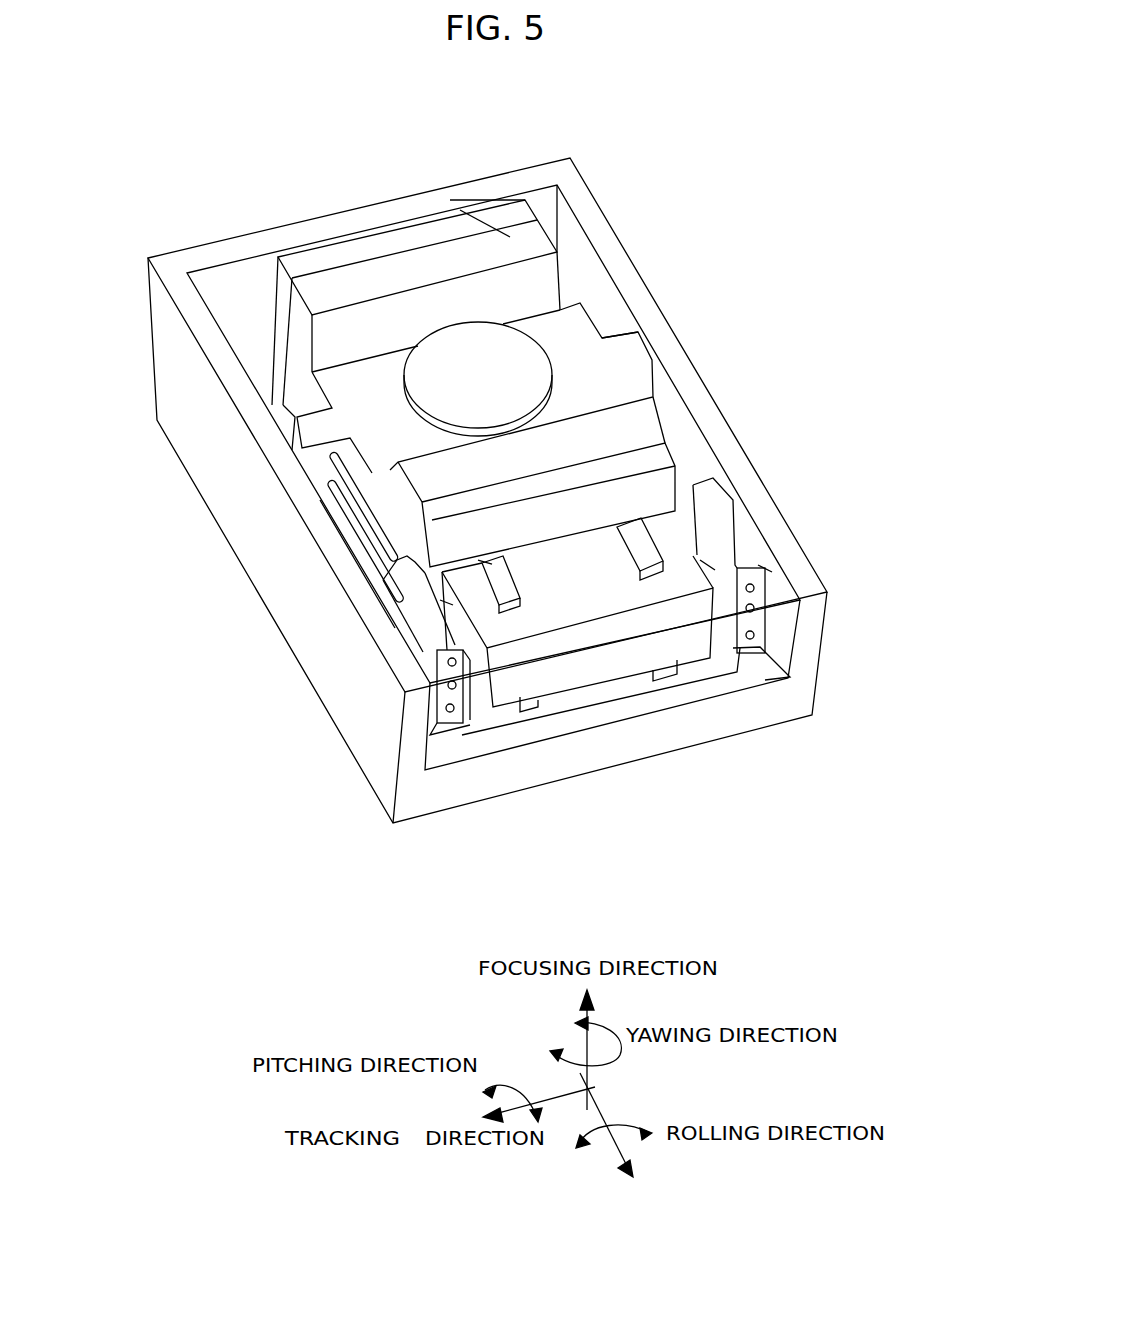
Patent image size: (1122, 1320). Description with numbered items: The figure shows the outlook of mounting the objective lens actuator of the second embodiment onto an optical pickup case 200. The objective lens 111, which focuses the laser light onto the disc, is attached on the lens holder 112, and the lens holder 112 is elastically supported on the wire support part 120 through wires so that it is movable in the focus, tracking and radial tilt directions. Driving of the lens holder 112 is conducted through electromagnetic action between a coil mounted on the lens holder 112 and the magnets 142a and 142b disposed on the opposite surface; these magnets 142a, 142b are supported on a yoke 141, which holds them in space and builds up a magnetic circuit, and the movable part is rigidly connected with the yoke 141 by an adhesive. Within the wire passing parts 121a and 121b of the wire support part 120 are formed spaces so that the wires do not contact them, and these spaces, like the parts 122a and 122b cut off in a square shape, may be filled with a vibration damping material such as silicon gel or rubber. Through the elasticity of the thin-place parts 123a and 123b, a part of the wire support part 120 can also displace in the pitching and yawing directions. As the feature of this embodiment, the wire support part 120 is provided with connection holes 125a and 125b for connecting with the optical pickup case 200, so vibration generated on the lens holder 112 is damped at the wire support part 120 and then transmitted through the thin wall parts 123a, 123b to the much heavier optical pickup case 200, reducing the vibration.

The optical pickup case 200 is at (278, 240).
The yoke 141 is at (345, 250).
The magnet 142a is at (510, 237).
The magnet 142b is at (632, 423).
The objective lens 111 is at (495, 352).
The lens holder 112 is at (620, 347).
The wire support part 120 is at (587, 672).
The connection hole 125a is at (503, 580).
The connection hole 125b is at (640, 543).
The wire passing part 121a is at (413, 610).
The wire passing part 121b is at (728, 530).
The cut-off part 122a is at (453, 605).
The cut-off part 122b is at (710, 567).
The thin-place part 123a is at (486, 562).
The thin-place part 123b is at (765, 570).